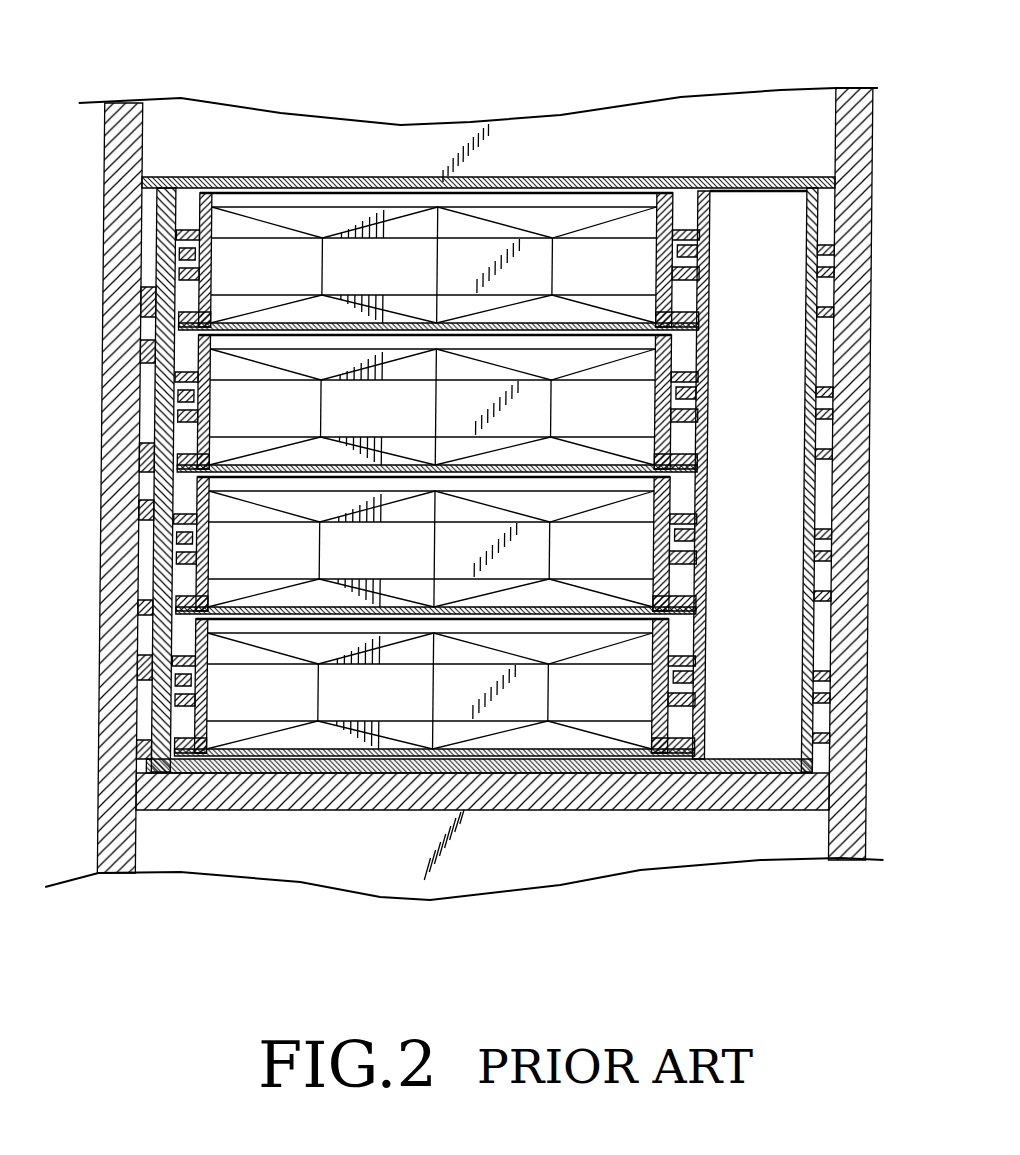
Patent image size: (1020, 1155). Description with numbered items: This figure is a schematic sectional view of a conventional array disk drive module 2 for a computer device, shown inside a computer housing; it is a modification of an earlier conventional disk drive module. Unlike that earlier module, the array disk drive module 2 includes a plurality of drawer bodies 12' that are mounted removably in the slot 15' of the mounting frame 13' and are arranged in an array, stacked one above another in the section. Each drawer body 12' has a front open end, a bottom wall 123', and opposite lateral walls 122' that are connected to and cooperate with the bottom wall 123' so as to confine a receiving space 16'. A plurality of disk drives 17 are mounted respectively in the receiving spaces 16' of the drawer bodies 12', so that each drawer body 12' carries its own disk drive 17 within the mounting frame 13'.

The array disk drive module 2 is at (472, 90).
The drawer body 12' is at (548, 393).
The lateral wall 122' is at (437, 390).
The bottom wall 123' is at (436, 398).
The mounting frame 13' is at (488, 147).
The slot 15' is at (689, 433).
The receiving space 16' is at (434, 369).
The disk drive 17 is at (568, 217).